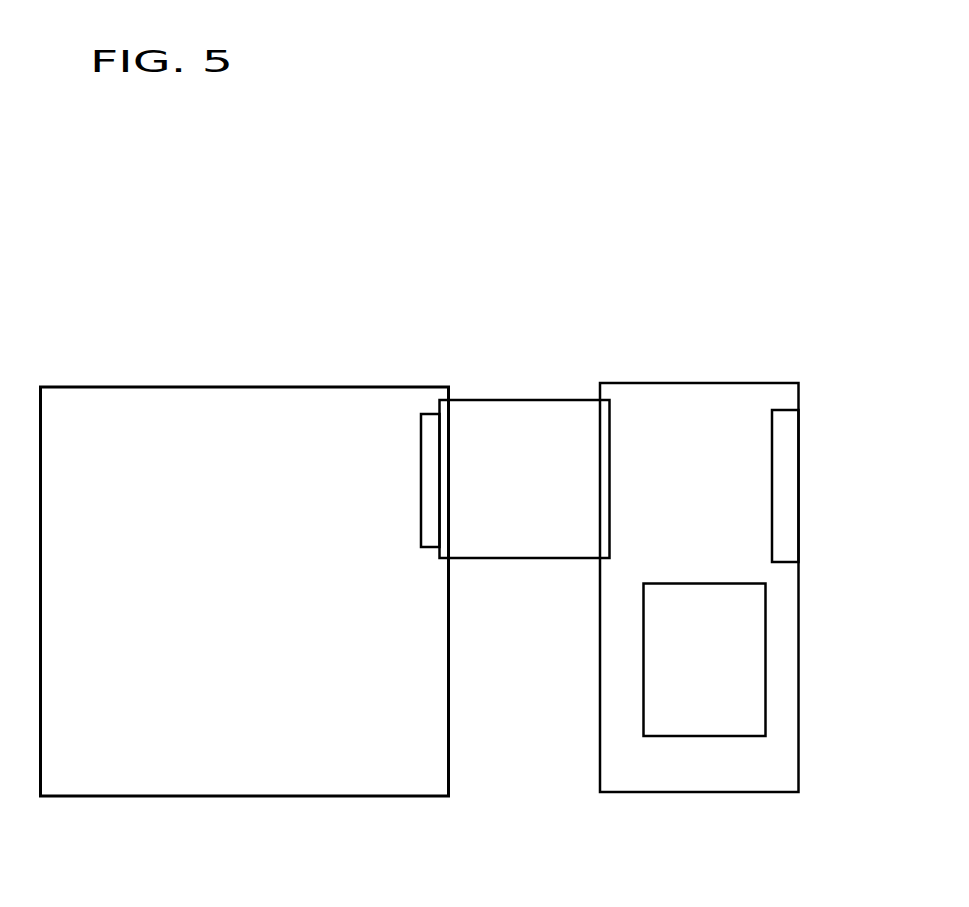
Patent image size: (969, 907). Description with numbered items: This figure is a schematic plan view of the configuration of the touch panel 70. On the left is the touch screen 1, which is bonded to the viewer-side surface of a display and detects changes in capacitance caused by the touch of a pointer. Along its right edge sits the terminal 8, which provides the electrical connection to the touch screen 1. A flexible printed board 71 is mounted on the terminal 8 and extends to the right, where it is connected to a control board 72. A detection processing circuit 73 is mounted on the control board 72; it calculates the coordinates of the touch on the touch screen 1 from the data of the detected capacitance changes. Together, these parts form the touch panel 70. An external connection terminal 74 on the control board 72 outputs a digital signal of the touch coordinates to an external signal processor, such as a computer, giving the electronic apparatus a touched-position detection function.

The touch screen 1 is at (243, 796).
The terminal 8 is at (431, 414).
The touch panel 70 is at (423, 255).
The flexible printed board 71 is at (525, 558).
The control board 72 is at (699, 383).
The detection processing circuit 73 is at (709, 736).
The external connection terminal 74 is at (783, 563).